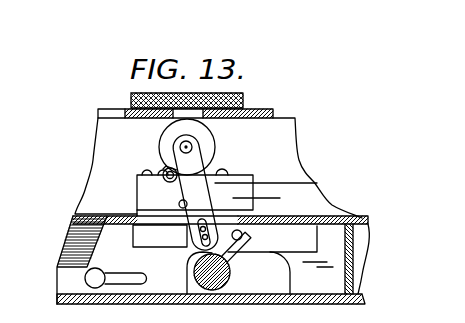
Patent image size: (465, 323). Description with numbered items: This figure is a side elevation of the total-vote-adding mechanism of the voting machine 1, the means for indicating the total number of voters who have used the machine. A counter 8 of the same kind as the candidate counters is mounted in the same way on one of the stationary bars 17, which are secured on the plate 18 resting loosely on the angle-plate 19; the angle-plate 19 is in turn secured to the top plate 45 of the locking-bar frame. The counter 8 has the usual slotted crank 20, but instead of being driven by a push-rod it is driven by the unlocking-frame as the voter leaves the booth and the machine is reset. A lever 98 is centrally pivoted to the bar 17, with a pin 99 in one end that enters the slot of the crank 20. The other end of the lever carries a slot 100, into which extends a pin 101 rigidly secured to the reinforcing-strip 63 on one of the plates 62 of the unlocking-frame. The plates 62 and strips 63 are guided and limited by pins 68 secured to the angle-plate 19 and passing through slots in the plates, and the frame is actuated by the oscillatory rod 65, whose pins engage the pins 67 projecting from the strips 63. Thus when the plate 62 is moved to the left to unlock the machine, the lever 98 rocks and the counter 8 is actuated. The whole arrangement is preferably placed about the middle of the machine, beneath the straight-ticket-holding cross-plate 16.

The machine body / frame 1 is at (88, 150).
The counter 8 is at (212, 147).
The cross-plate 16 is at (243, 98).
The bars 17 is at (282, 203).
The plate 18 is at (350, 215).
The angle-plate 19 is at (69, 238).
The crank 20 is at (171, 156).
The top plate 45 is at (211, 308).
The plates 62 is at (319, 259).
The reinforcing-strips 63 is at (137, 261).
The rod 65 is at (232, 282).
The pins 67 is at (243, 232).
The pins 68 is at (104, 263).
The lever 98 is at (187, 192).
The pin 99 is at (173, 184).
The slot 100 is at (215, 219).
The pin 101 is at (188, 240).